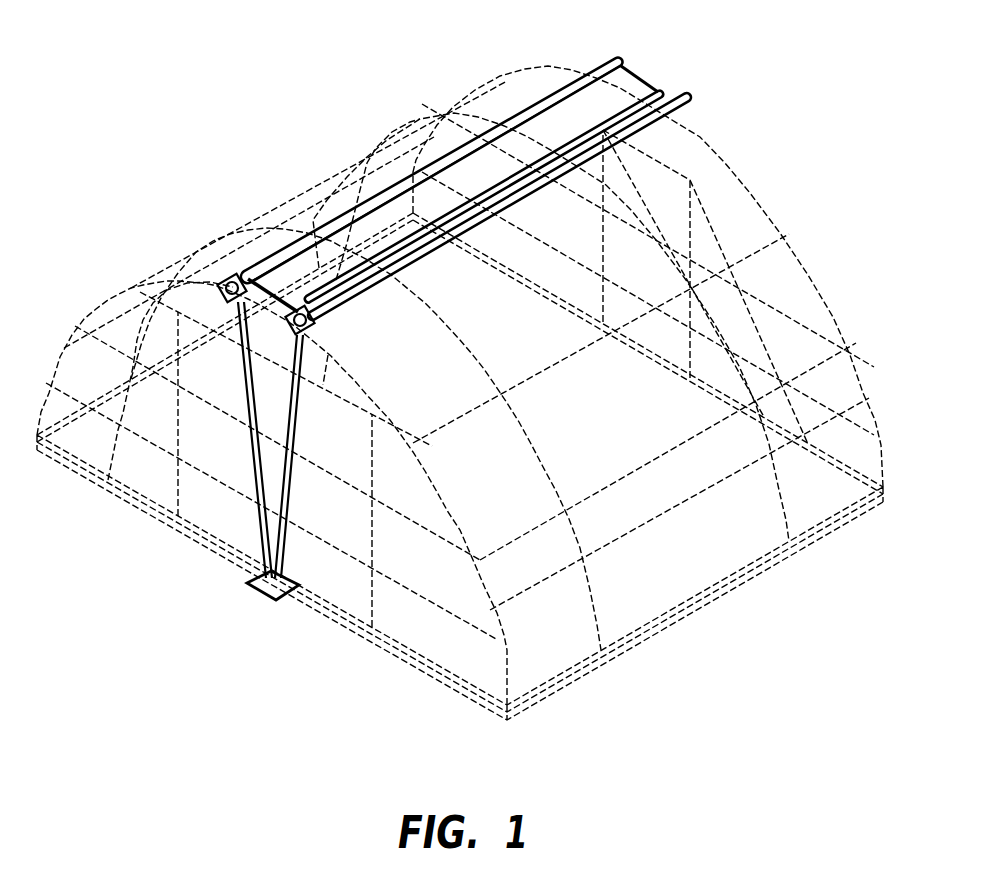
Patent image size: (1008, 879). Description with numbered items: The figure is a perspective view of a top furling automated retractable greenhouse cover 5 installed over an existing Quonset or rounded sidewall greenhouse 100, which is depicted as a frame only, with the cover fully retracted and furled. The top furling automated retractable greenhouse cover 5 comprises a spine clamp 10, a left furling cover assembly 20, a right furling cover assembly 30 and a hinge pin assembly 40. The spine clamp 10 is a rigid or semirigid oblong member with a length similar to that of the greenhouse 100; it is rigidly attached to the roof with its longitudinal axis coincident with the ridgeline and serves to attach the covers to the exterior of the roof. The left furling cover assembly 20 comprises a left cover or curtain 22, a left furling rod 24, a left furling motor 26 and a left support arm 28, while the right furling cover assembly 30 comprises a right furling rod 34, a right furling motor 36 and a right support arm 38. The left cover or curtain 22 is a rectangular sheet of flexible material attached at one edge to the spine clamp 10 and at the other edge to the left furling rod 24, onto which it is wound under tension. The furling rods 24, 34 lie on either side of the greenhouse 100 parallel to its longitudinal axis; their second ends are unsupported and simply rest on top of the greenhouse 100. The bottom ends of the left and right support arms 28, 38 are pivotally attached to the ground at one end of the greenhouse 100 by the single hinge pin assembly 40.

The top furling automated retractable greenhouse cover 5 is at (218, 70).
The spine clamp 10 is at (661, 89).
The left furling cover assembly 20 is at (290, 233).
The left cover or curtain 22 is at (325, 253).
The left furling rod 24 is at (566, 80).
The left furling motor 26 is at (226, 283).
The left support arm 28 is at (262, 500).
The right furling cover assembly 30 is at (710, 108).
The right furling rod 34 is at (692, 98).
The right furling motor 36 is at (310, 329).
The right support arm 38 is at (283, 500).
The hinge pin assembly 40 is at (258, 586).
The greenhouse 100 is at (753, 193).